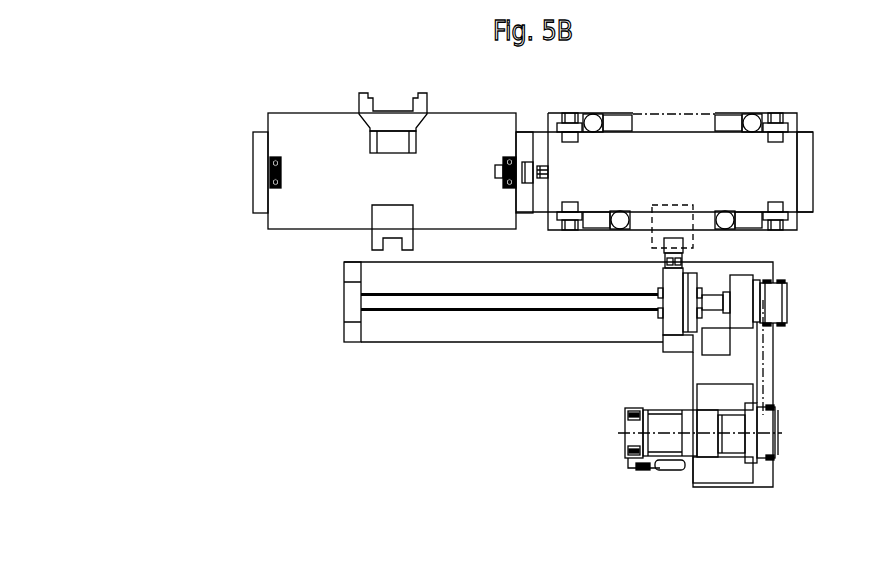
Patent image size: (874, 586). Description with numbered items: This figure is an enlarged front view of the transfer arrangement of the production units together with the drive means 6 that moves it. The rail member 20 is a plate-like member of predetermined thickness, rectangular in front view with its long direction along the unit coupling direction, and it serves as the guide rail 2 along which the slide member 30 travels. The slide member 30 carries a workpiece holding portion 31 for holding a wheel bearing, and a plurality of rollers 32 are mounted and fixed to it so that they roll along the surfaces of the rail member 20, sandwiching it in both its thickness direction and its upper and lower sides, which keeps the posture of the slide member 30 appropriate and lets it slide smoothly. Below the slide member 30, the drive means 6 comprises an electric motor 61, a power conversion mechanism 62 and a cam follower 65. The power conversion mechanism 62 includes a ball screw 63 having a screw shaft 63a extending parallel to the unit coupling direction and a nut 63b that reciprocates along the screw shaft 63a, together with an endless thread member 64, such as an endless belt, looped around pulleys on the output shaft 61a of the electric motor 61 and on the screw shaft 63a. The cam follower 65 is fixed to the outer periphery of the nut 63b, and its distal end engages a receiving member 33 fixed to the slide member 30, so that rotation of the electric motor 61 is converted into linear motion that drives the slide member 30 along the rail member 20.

The guide rail 2 is at (818, 136).
The drive means 6 is at (580, 436).
The rail member 20 is at (257, 181).
The slide member 30 is at (308, 207).
The workpiece holding portion 31 is at (393, 118).
The rollers 32 is at (593, 113).
The receiving member 33 is at (372, 223).
The electric motor 61 is at (662, 443).
The output shaft 61a is at (775, 441).
The power conversion mechanism 62 is at (784, 343).
The ball screw 63 is at (531, 338).
The screw shaft 63a is at (483, 300).
The nut 63b is at (672, 323).
The endless thread member 64 is at (768, 372).
The cam follower 65 is at (688, 259).